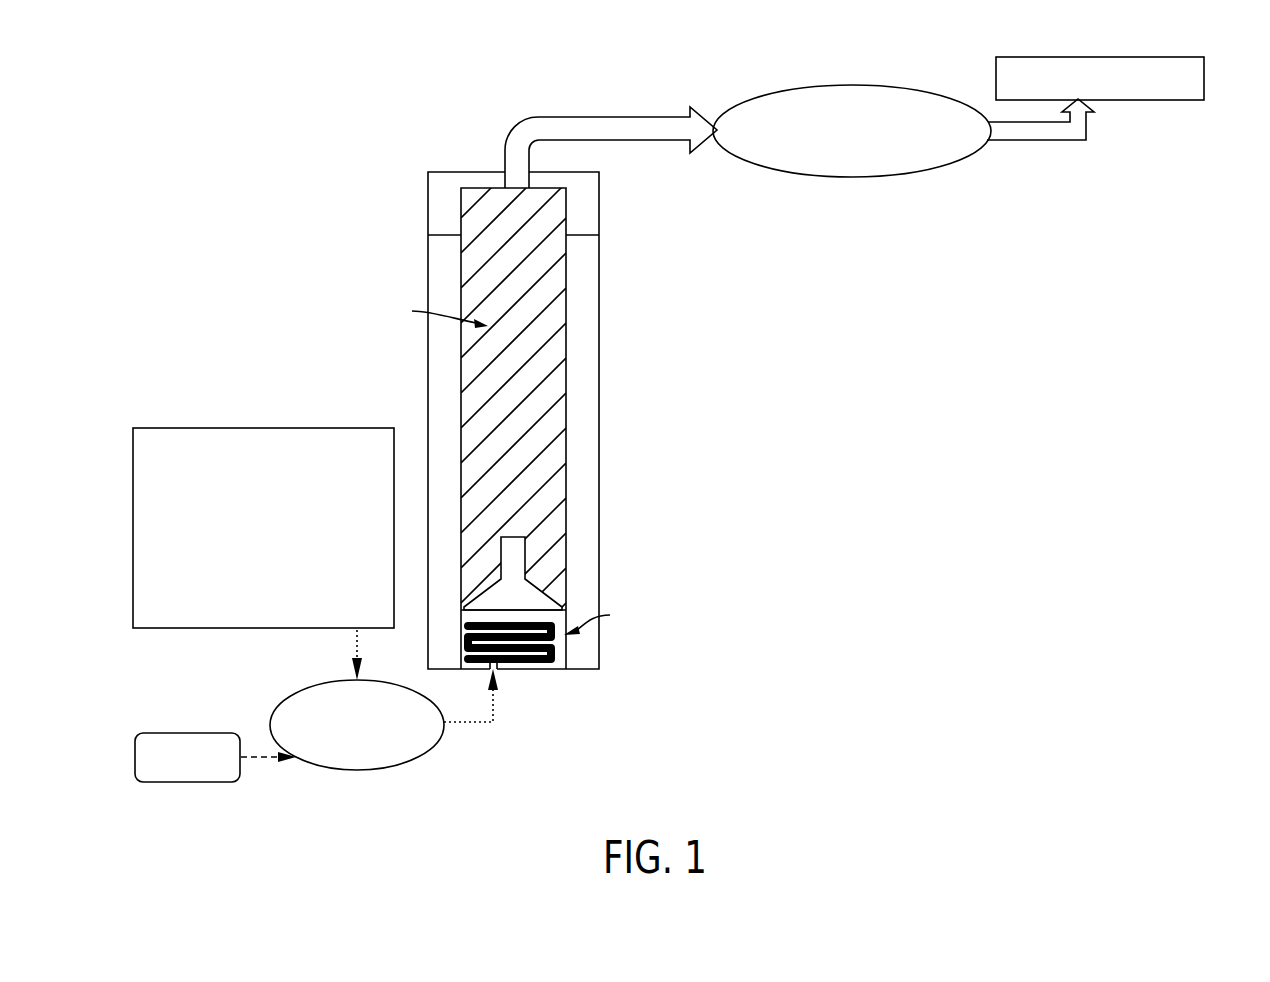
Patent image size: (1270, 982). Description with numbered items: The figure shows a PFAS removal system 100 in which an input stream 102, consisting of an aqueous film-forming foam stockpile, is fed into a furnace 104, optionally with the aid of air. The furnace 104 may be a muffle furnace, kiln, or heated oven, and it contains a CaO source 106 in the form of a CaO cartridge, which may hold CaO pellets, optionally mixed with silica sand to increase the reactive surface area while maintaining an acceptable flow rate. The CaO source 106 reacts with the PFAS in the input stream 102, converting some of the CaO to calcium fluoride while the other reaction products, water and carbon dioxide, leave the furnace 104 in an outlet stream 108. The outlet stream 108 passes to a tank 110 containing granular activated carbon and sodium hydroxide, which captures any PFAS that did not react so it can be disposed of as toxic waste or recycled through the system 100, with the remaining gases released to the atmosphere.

The system 100 is at (217, 120).
The input stream 102 is at (168, 427).
The furnace 104 is at (433, 231).
The CaO source 106 is at (463, 200).
The outlet stream 108 is at (600, 114).
The tank 110 is at (935, 170).